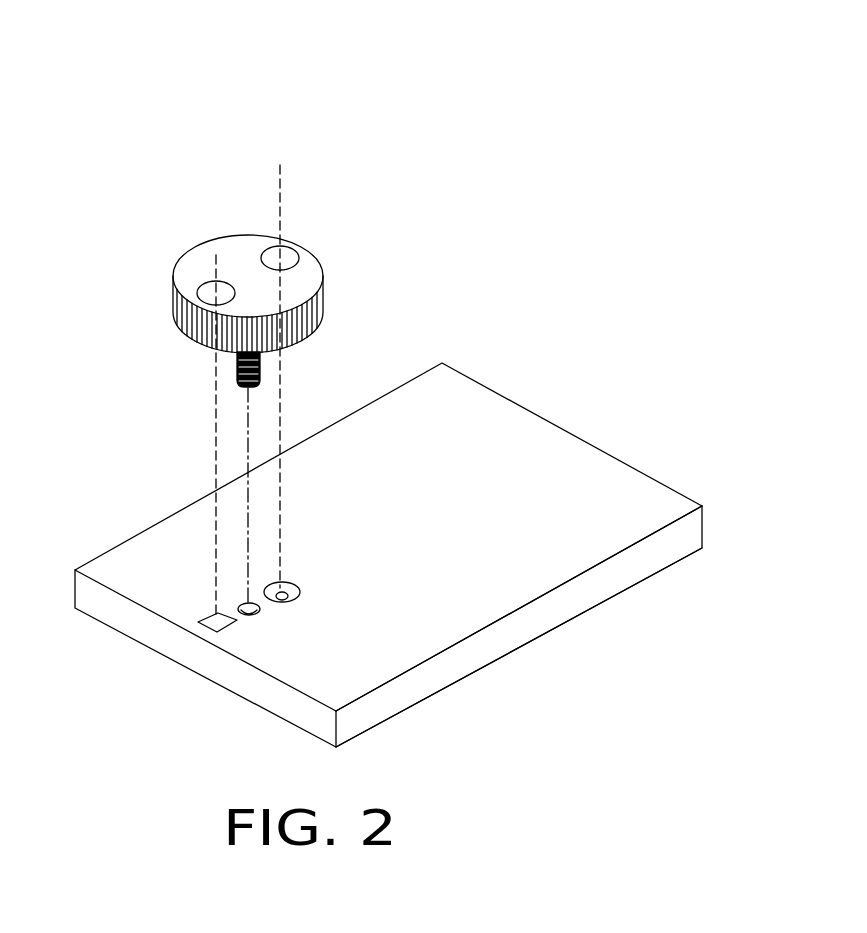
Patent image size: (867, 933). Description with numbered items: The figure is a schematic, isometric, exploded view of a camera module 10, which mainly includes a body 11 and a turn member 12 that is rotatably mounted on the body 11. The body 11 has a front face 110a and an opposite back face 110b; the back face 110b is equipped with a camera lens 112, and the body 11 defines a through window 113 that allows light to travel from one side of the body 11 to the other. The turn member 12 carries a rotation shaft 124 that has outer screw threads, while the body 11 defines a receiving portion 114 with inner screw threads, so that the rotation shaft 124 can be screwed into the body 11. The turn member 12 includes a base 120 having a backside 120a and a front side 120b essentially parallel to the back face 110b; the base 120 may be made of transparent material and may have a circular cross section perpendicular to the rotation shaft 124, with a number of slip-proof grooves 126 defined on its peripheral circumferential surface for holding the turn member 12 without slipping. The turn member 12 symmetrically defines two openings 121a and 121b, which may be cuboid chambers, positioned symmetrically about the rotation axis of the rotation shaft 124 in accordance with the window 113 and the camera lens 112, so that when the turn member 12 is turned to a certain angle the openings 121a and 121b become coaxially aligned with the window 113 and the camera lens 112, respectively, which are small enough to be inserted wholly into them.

The camera module 10 is at (355, 35).
The body 11 is at (654, 457).
The front face 110a is at (565, 621).
The back face 110b is at (610, 537).
The camera lens 112 is at (274, 602).
The through window 113 is at (214, 628).
The receiving portion 114 is at (249, 616).
The turn member 12 is at (289, 286).
The base 120 is at (291, 293).
The backside 120a is at (302, 287).
The front side 120b is at (251, 317).
The opening 121a is at (205, 290).
The opening 121b is at (284, 256).
The rotation shaft 124 is at (237, 364).
The slip-proof grooves 126 is at (177, 322).